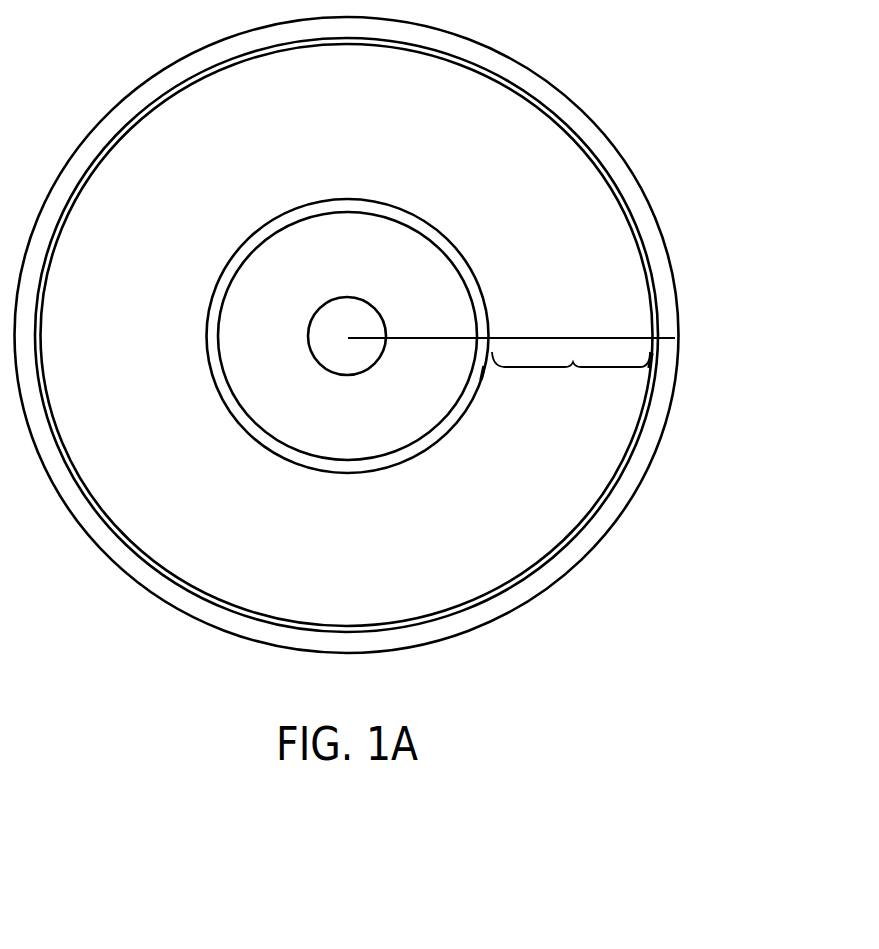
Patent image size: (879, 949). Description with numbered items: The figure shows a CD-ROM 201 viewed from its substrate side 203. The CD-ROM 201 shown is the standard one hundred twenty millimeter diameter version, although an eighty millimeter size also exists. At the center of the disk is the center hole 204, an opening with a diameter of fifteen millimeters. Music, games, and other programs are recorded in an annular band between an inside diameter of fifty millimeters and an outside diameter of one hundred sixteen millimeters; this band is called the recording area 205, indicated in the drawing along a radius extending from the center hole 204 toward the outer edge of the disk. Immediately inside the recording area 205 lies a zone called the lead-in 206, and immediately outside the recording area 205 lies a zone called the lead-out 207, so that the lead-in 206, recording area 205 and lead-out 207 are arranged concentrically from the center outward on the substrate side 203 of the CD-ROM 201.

The CD-ROM 201 is at (565, 92).
The substrate side 203 is at (528, 553).
The center hole 204 is at (343, 373).
The recording area 205 is at (511, 371).
The lead-in 206 is at (481, 382).
The lead-out 207 is at (650, 365).